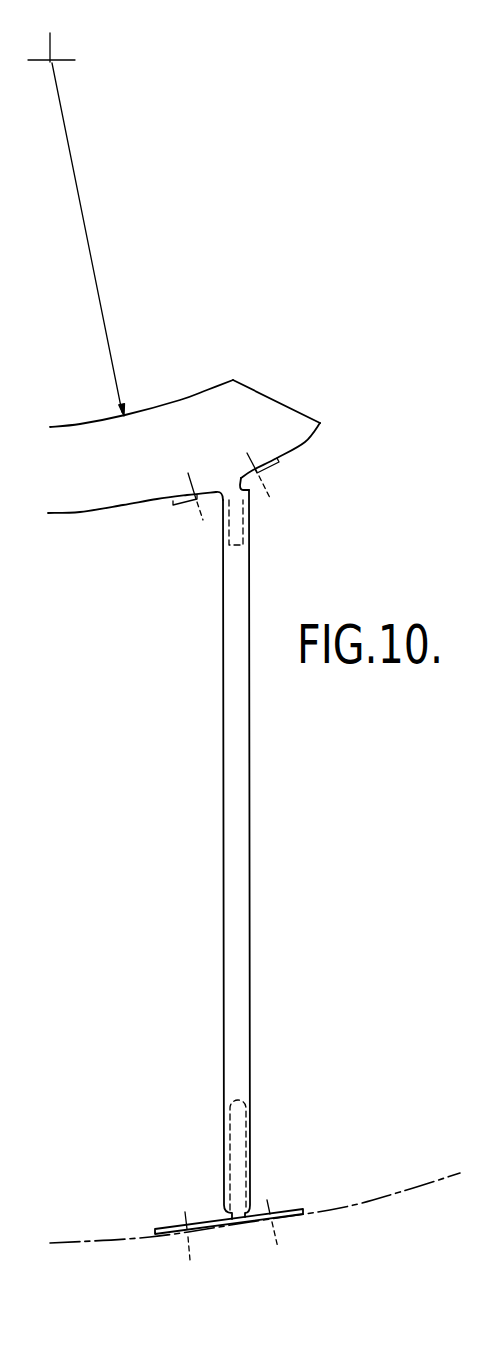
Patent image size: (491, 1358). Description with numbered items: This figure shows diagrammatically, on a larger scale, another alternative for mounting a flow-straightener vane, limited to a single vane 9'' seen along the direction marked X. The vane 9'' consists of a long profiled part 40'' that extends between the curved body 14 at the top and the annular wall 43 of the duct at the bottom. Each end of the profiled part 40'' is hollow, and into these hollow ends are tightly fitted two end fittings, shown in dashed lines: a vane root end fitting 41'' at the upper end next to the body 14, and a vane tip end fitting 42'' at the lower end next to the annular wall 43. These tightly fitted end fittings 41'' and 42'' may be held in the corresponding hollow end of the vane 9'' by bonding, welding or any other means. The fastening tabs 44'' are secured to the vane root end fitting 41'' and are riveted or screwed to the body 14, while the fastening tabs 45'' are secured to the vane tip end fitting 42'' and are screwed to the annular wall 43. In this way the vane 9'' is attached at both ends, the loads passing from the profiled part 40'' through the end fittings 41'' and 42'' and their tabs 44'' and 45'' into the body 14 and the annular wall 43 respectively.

The viewing direction X is at (53, 59).
The body 14 is at (97, 450).
The vane 9'' is at (228, 856).
The profiled part 40'' is at (267, 848).
The vane root end fitting 41'' is at (269, 535).
The vane tip end fitting 42'' is at (275, 1155).
The annular wall 43 is at (412, 1187).
The fastening tabs 44'' is at (239, 510).
The fastening tabs 45'' is at (238, 1199).